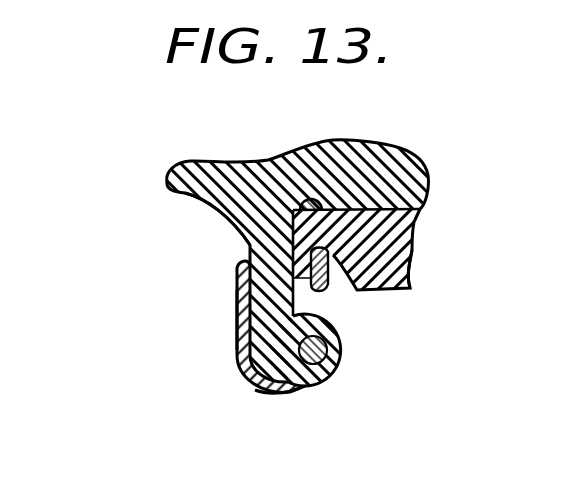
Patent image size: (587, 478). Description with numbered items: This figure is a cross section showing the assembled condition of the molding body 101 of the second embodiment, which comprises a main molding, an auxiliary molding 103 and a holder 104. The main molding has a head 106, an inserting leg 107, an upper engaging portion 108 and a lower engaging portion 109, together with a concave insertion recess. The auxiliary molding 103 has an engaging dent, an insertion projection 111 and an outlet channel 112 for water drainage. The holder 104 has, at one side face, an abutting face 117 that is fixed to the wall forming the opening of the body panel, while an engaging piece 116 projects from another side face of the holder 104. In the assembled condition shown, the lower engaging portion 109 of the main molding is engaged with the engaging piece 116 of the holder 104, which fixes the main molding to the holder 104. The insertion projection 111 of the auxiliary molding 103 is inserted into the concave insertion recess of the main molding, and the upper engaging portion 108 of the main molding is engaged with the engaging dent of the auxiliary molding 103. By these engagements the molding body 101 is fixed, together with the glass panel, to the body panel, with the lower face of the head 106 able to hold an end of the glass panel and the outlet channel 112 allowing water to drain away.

The molding body 101 is at (175, 172).
The auxiliary molding 103 is at (460, 211).
The holder 104 is at (236, 282).
The head 106 is at (367, 143).
The inserting leg 107 is at (263, 243).
The upper engaging portion 108 is at (333, 287).
The lower engaging portion 109 is at (306, 376).
The insertion projection 111 is at (283, 164).
The outlet channel 112 is at (405, 255).
The engaging piece 116 is at (322, 349).
The abutting face 117 is at (236, 328).